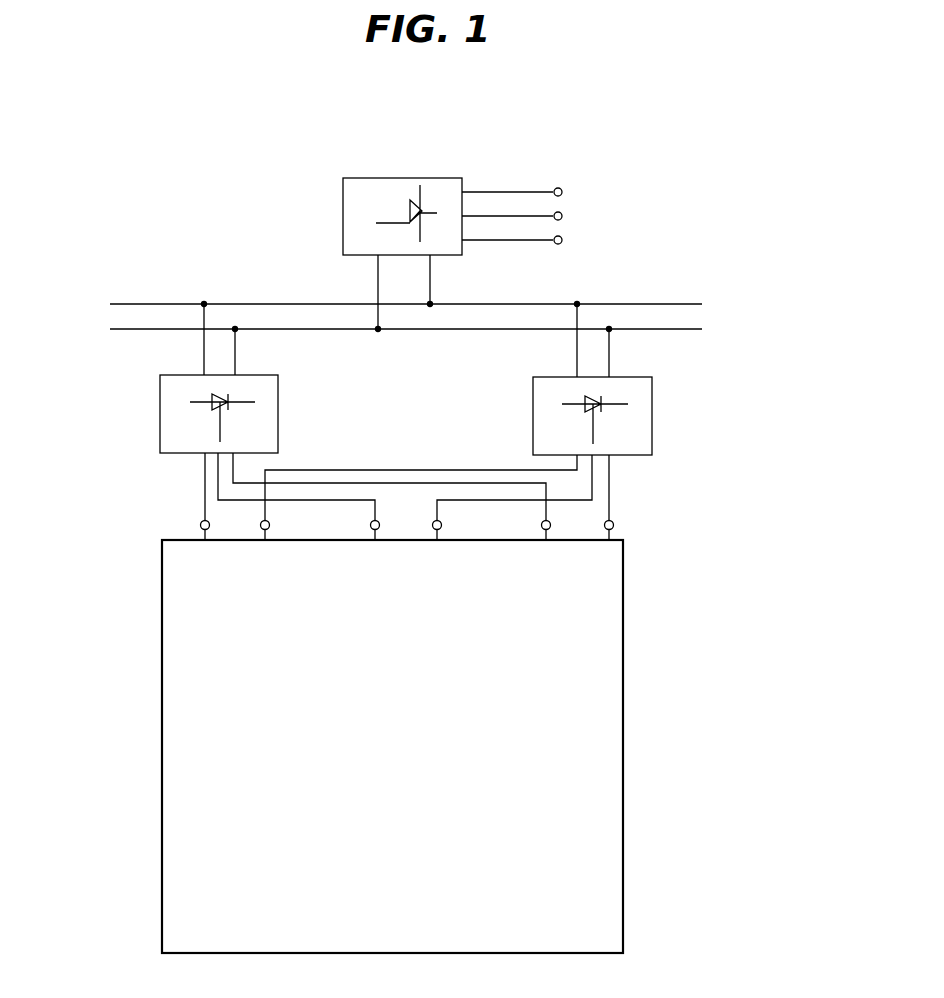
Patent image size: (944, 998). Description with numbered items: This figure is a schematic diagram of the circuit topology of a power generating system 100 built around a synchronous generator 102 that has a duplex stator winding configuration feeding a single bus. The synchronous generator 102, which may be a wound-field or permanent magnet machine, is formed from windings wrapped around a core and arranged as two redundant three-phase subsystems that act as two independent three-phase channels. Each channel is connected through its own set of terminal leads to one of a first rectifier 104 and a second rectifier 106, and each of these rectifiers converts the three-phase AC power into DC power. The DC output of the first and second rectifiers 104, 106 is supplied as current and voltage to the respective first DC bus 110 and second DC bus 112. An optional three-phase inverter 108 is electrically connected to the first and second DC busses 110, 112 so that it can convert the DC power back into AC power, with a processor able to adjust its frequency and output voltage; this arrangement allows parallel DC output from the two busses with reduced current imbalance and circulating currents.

The power generating system 100 is at (670, 94).
The synchronous generator 102 is at (173, 748).
The first rectifier 104 is at (167, 430).
The second rectifier 106 is at (628, 432).
The three-phase inverter 108 is at (398, 178).
The first DC bus 110 is at (666, 303).
The second DC bus 112 is at (667, 329).